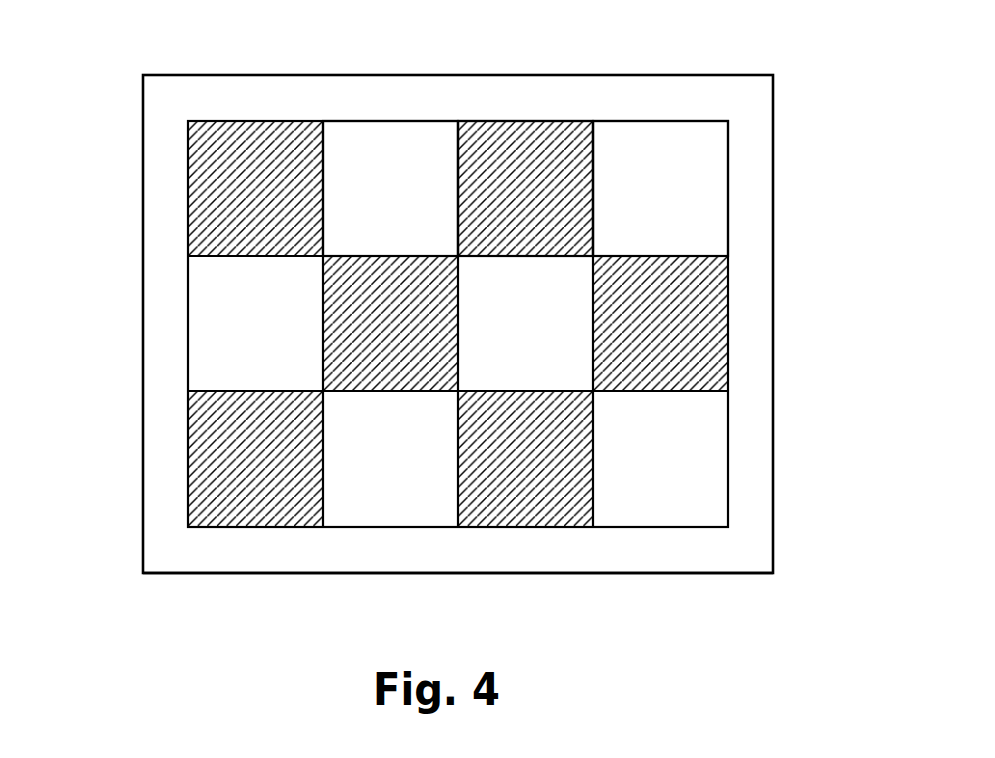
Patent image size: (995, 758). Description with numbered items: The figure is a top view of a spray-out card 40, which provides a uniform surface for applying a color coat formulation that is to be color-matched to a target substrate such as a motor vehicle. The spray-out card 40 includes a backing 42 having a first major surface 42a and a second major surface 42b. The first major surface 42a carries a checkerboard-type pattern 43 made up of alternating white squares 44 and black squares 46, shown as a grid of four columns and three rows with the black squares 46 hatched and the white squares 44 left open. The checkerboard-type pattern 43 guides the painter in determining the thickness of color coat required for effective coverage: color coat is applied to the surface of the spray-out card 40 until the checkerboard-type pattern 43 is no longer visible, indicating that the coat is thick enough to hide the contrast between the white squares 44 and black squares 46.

The spray-out card 40 is at (814, 92).
The backing 42 is at (176, 302).
The first major surface 42a is at (237, 550).
The second major surface 42b is at (357, 573).
The checkerboard-type pattern 43 is at (520, 104).
The white squares 44 is at (388, 138).
The black squares 46 is at (713, 337).